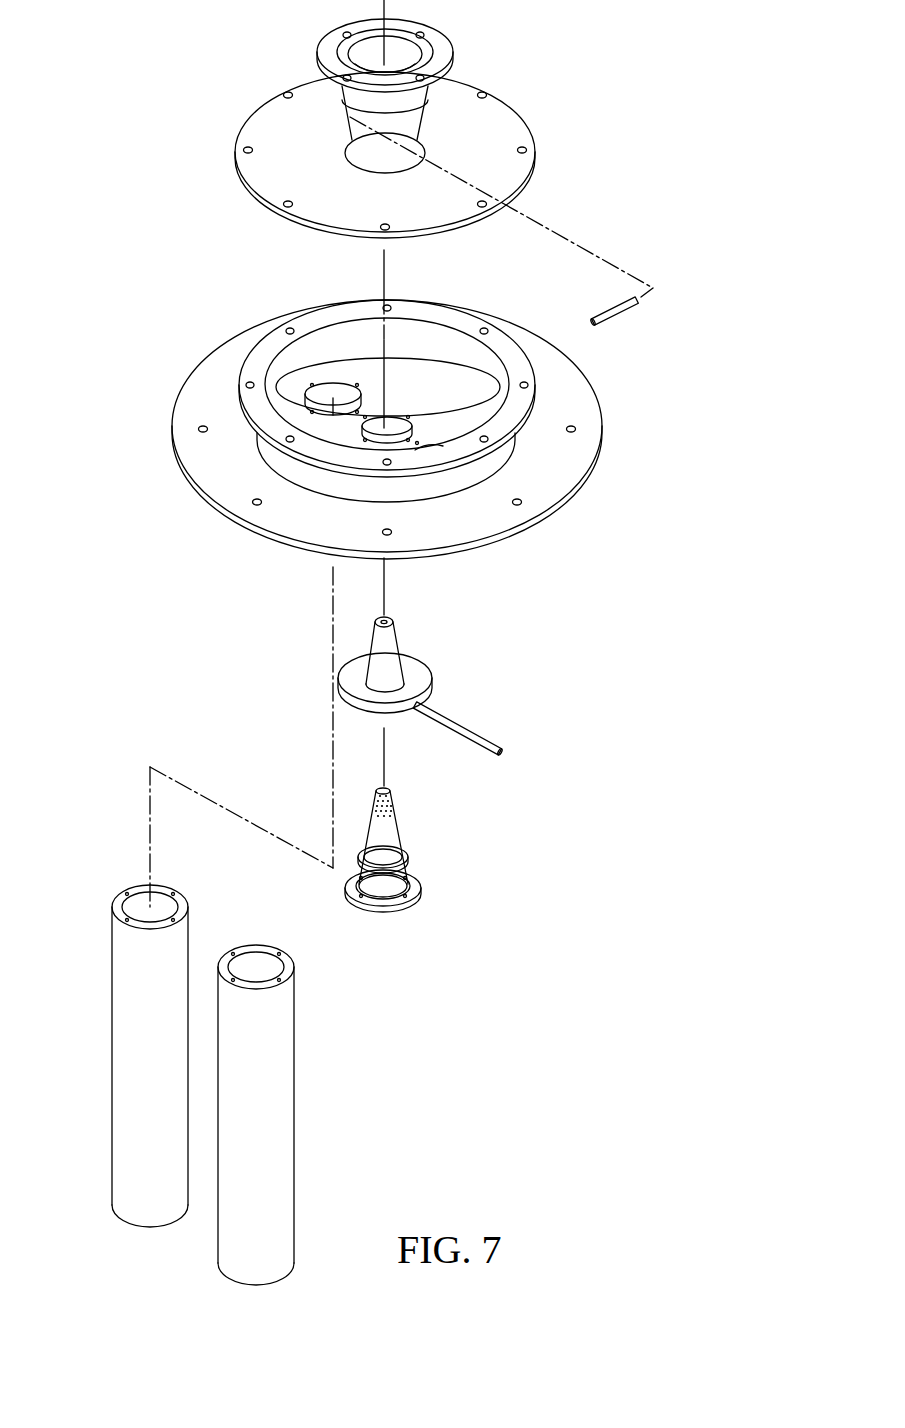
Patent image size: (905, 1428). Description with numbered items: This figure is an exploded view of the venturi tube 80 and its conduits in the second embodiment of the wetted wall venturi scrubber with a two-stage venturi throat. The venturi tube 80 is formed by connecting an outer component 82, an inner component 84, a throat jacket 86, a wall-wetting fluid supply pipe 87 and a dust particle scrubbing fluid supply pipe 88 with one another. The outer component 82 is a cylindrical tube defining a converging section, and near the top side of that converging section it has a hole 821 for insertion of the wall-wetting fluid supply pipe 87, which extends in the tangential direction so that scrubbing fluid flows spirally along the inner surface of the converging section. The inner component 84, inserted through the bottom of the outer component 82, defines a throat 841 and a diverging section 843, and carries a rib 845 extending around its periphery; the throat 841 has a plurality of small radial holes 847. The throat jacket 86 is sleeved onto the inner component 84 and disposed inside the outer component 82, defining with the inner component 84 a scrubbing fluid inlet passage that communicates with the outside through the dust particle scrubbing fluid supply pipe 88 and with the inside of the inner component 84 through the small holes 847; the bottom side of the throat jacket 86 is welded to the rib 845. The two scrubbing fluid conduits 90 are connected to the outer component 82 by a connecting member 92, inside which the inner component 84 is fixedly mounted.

The venturi tube 80 is at (131, 207).
The outer component 82 is at (552, 148).
The hole 821 is at (380, 100).
The wall-wetting fluid supply pipe 87 is at (612, 315).
The connecting member 92 is at (156, 419).
The throat jacket 86 is at (447, 677).
The dust particle scrubbing fluid supply pipe 88 is at (497, 737).
The inner component 84 is at (453, 870).
The throat 841 is at (392, 836).
The diverging section 843 is at (393, 885).
The rib 845 is at (368, 858).
The small radial holes 847 is at (396, 802).
The scrubbing fluid conduits 90 is at (130, 1045).